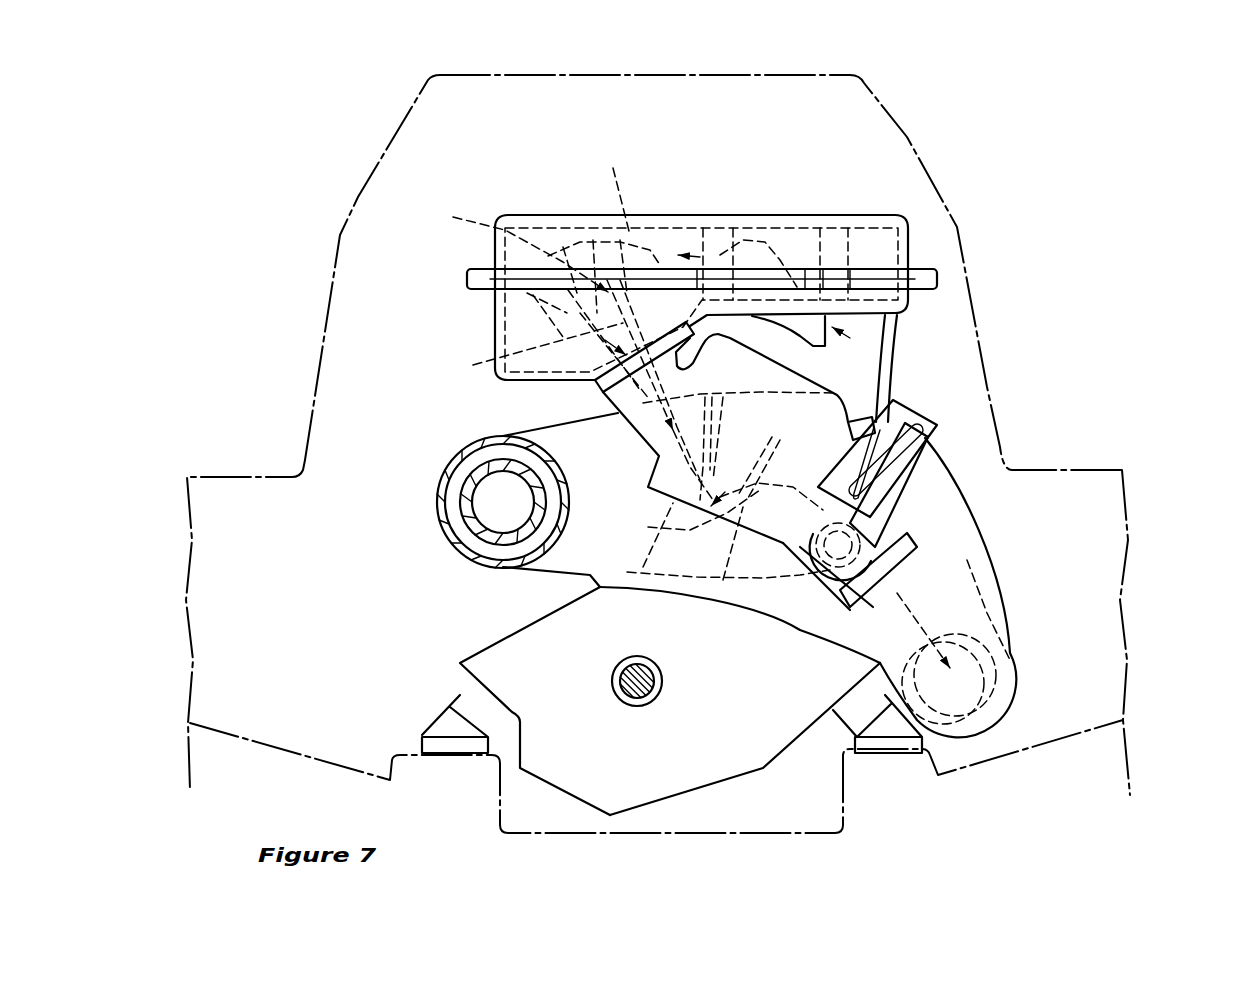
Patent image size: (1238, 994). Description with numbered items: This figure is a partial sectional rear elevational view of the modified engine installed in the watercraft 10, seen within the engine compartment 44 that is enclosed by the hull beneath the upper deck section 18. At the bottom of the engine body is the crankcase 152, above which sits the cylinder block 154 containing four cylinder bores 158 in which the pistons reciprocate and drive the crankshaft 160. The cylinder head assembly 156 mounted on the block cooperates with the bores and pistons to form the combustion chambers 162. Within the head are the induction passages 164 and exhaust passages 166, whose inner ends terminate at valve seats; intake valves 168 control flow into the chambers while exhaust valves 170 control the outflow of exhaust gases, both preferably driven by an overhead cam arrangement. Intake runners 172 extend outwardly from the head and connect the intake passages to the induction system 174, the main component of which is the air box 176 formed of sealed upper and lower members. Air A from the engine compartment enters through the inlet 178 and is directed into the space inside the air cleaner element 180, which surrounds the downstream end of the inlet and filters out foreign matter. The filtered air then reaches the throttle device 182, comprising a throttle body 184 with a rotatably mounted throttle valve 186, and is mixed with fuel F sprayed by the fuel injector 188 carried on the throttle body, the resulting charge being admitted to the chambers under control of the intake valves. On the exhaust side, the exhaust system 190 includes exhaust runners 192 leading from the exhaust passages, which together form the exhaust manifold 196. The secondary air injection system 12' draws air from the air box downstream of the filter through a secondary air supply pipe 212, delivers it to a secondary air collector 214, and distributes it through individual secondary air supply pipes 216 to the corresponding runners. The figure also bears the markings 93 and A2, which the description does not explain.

The watercraft 10 is at (1132, 183).
The upper deck section 18 is at (323, 318).
The engine compartment 44 is at (862, 153).
The roller 93 is at (997, 695).
The secondary air injection system 12' is at (935, 437).
The crankcase 152 is at (780, 728).
The cylinder block 154 is at (597, 580).
The cylinder head assembly 156 is at (818, 375).
The cylinder bores 158 is at (640, 547).
The crankshaft 160 is at (653, 697).
The combustion chambers 162 is at (680, 525).
The induction passages 164 is at (662, 458).
The exhaust passages 166 is at (770, 500).
The intake valves 168 is at (722, 400).
The exhaust valves 170 is at (757, 467).
The intake runners 172 is at (645, 432).
The induction system 174 is at (508, 185).
The air box 176 is at (802, 213).
The inlet 178 is at (813, 343).
The air cleaner element 180 is at (850, 253).
The throttle device 182 is at (509, 245).
The throttle body 184 is at (567, 260).
The throttle valve 186 is at (655, 285).
The fuel injector 188 is at (523, 308).
The exhaust system 190 is at (1040, 578).
The exhaust runners 192 is at (800, 547).
The exhaust manifold 196 is at (817, 572).
The secondary air supply pipe 212 is at (897, 367).
The secondary air collector 214 is at (935, 435).
The individual secondary air supply pipes 216 is at (903, 468).
The atmospheric air A is at (617, 189).
The axis A2 is at (893, 515).
The fuel F is at (539, 351).